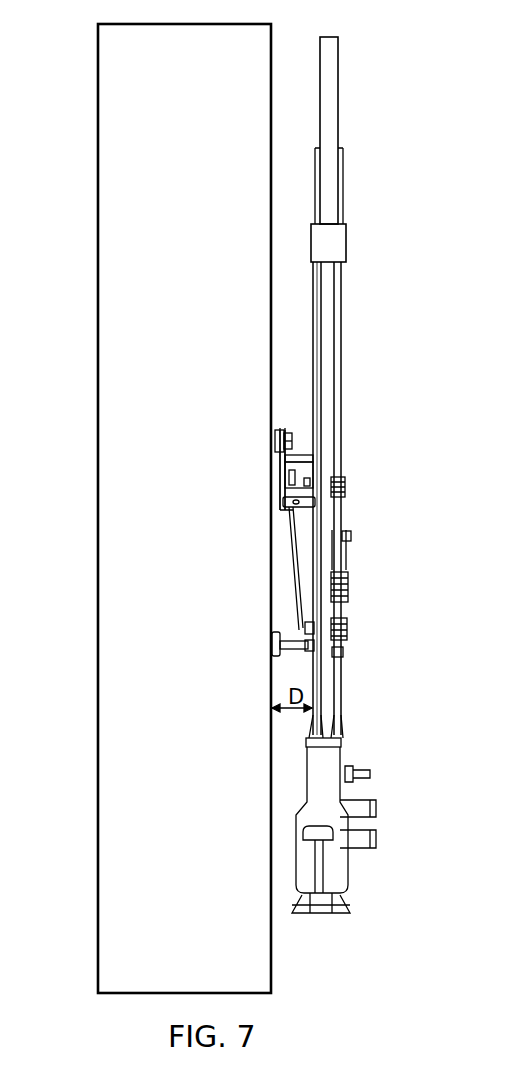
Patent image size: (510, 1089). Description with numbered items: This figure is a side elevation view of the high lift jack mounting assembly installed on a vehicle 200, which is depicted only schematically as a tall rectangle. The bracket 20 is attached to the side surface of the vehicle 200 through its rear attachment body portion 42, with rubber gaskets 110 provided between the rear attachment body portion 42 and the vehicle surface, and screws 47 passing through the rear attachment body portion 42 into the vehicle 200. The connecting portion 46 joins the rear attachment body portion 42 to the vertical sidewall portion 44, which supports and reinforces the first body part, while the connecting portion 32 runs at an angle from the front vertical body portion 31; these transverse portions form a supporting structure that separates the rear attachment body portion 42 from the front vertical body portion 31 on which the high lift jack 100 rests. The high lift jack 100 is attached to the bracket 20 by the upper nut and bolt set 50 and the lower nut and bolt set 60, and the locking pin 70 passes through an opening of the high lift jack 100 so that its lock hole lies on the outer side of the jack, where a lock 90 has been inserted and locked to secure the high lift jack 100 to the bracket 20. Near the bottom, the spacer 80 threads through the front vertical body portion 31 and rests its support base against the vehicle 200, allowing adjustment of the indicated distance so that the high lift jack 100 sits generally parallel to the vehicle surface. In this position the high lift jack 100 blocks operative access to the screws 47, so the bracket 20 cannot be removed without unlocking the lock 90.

The bracket 20 is at (262, 494).
The front vertical body portion 31 is at (313, 564).
The connecting portion 32 is at (300, 460).
The rear attachment body portion 42 is at (282, 449).
The vertical sidewall portion 44 is at (299, 597).
The connecting portion 46 is at (284, 502).
The screws 47 is at (314, 428).
The upper nut and bolt set 50 is at (345, 488).
The lower nut and bolt set 60 is at (347, 631).
The locking pin 70 is at (351, 537).
The spacer 80 is at (277, 651).
The lock 90 is at (348, 586).
The high lift jack 100 is at (336, 323).
The rubber gaskets 110 is at (278, 437).
The vehicle 200 is at (98, 700).